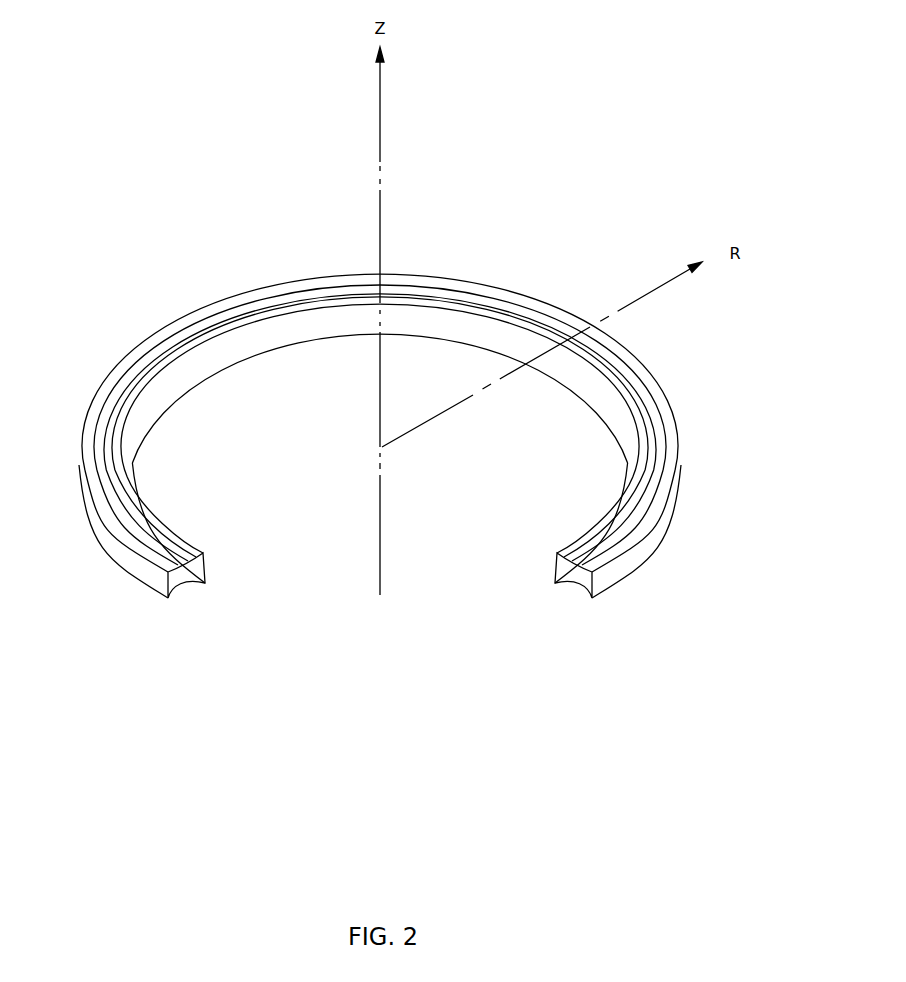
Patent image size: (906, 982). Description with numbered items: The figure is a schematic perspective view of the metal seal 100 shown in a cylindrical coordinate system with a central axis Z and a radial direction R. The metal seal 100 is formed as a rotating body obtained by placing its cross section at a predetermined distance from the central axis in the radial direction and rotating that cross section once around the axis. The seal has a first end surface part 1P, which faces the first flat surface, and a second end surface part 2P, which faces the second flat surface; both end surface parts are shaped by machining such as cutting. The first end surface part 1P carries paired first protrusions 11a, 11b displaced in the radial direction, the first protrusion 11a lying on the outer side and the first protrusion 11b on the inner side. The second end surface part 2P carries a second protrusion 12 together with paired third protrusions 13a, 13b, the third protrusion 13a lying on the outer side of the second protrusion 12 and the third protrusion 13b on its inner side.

The metal seal 100 is at (618, 118).
The first end surface part 1P is at (290, 357).
The second end surface part 2P is at (268, 276).
The first protrusion 11a is at (171, 600).
The first protrusion 11b is at (200, 586).
The second protrusion 12 is at (193, 554).
The third protrusion 13a is at (168, 570).
The third protrusion 13b is at (203, 550).